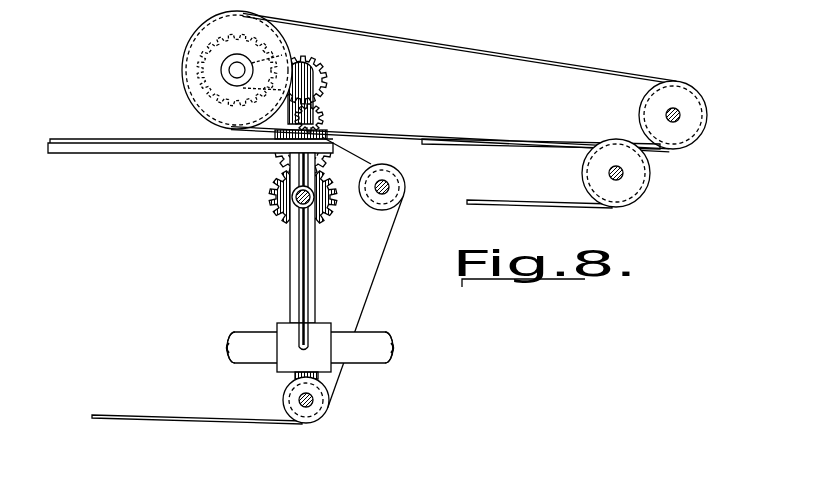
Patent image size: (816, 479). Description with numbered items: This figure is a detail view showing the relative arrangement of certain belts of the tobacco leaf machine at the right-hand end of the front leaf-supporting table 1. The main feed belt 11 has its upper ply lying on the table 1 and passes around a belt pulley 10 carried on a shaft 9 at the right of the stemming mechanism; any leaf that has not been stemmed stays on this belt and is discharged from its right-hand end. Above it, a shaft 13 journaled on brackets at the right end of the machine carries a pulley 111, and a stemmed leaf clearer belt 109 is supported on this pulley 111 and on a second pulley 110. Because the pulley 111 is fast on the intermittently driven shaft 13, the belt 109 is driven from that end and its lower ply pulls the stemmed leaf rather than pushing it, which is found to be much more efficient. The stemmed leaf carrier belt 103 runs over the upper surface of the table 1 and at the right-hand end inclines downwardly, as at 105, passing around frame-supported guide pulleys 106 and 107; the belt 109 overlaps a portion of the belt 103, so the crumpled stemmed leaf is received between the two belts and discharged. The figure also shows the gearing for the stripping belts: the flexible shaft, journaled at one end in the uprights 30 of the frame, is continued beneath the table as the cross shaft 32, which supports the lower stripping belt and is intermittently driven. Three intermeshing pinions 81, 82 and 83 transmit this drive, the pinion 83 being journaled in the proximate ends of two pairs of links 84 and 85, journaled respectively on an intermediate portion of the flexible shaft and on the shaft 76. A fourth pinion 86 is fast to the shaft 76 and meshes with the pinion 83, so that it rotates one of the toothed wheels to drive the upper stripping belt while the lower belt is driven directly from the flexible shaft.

The front leaf-supporting table 1 is at (151, 148).
The stemmed leaf carrier belt 103 is at (99, 138).
The shaft 76 is at (229, 70).
The fourth pinion 86 is at (213, 38).
The pair of links 85 is at (267, 72).
The pulley 110 is at (183, 92).
The pinion 83 is at (325, 70).
The pair of links 84 is at (304, 110).
The pinion 82 is at (318, 121).
The stemmed leaf clearer belt 109 is at (518, 55).
The pulley 111 is at (694, 90).
The shaft 13 is at (665, 114).
The belt pulley 10 is at (630, 190).
The shaft 9 is at (622, 172).
The main feed belt 11 is at (452, 146).
The downwardly inclined portion of carrier belt 105 is at (366, 161).
The guide pulley 106 is at (374, 207).
The guide pulley 107 is at (311, 416).
The uprights 30 is at (290, 291).
The pinion 81 is at (275, 176).
The cross shaft 32 is at (287, 208).